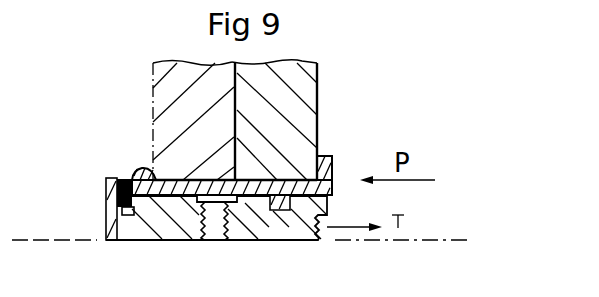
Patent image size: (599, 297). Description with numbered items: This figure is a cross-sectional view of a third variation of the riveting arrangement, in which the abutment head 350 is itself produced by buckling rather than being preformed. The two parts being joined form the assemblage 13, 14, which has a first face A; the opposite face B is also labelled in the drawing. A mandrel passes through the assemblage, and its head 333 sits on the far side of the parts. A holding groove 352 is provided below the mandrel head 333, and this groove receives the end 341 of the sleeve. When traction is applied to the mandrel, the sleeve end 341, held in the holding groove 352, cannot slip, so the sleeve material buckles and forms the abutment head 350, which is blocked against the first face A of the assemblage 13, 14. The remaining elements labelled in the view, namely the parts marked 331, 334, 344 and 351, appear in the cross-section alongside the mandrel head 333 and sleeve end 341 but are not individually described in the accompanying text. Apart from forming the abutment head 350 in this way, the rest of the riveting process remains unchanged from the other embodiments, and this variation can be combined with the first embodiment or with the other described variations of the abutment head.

The assemblage part 13 is at (172, 62).
The assemblage part 14 is at (306, 62).
The first face of the assemblage A is at (153, 106).
The region B is at (318, 104).
The plate 331 is at (262, 186).
The head of the mandrel 333 is at (119, 223).
The threaded bore 334 is at (212, 240).
The end of the sleeve 341 is at (106, 193).
The tab 344 is at (291, 205).
The abutment head 350 is at (134, 162).
The flange 351 is at (336, 160).
The holding groove 352 is at (132, 216).